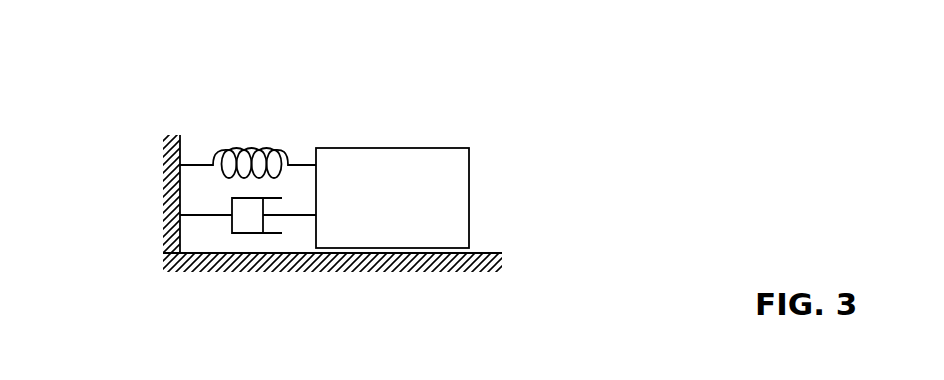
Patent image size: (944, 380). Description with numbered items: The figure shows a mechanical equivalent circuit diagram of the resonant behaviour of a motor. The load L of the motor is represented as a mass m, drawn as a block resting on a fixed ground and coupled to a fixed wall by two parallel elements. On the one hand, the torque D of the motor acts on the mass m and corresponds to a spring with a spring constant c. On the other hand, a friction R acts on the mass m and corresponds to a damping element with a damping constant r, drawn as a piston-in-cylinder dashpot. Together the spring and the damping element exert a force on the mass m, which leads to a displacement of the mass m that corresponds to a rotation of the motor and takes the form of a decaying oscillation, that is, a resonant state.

The spring constant c is at (248, 148).
The damping constant r is at (248, 215).
The mass m is at (392, 198).
The load L is at (400, 148).
The torque D is at (190, 153).
The friction R is at (192, 203).